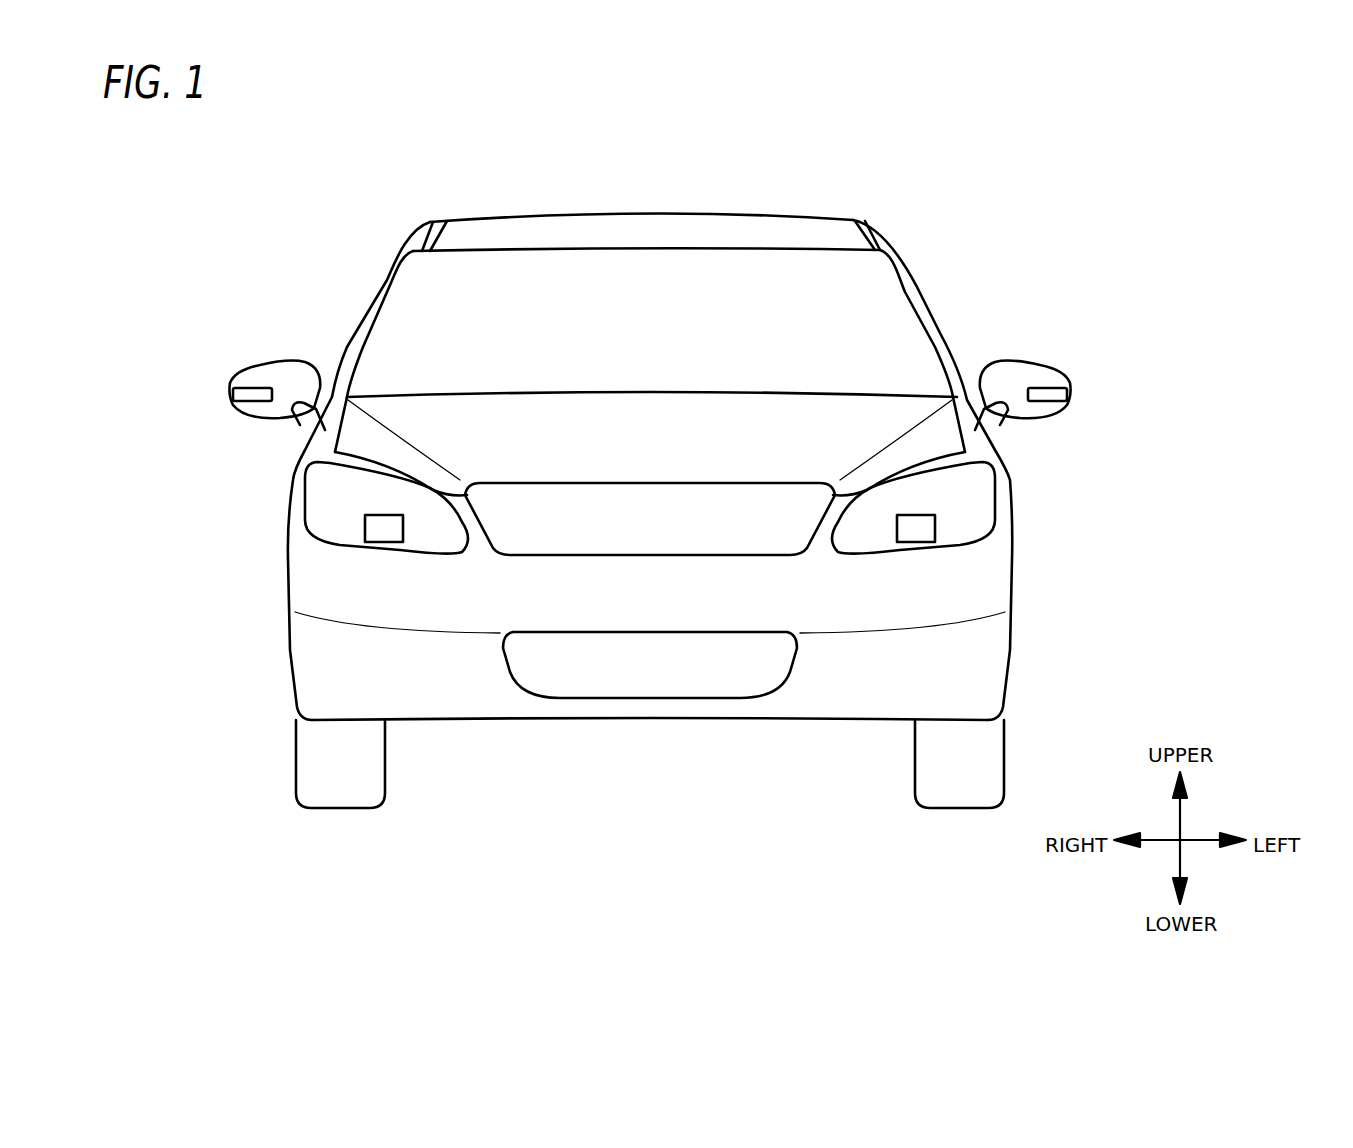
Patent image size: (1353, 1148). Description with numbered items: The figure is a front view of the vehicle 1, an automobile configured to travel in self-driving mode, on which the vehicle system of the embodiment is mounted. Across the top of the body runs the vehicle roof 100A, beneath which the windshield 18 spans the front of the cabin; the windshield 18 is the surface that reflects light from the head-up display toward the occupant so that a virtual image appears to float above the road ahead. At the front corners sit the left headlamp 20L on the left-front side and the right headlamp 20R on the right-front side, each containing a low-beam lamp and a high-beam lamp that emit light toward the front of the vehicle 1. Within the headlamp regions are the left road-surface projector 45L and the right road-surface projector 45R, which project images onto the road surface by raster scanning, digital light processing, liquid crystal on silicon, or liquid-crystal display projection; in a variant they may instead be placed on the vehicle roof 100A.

The vehicle 1 is at (378, 180).
The vehicle roof 100A is at (828, 213).
The windshield 18 is at (893, 298).
The right headlamp 20R is at (334, 486).
The left headlamp 20L is at (973, 482).
The right road-surface projector 45R is at (365, 525).
The left road-surface projector 45L is at (937, 528).